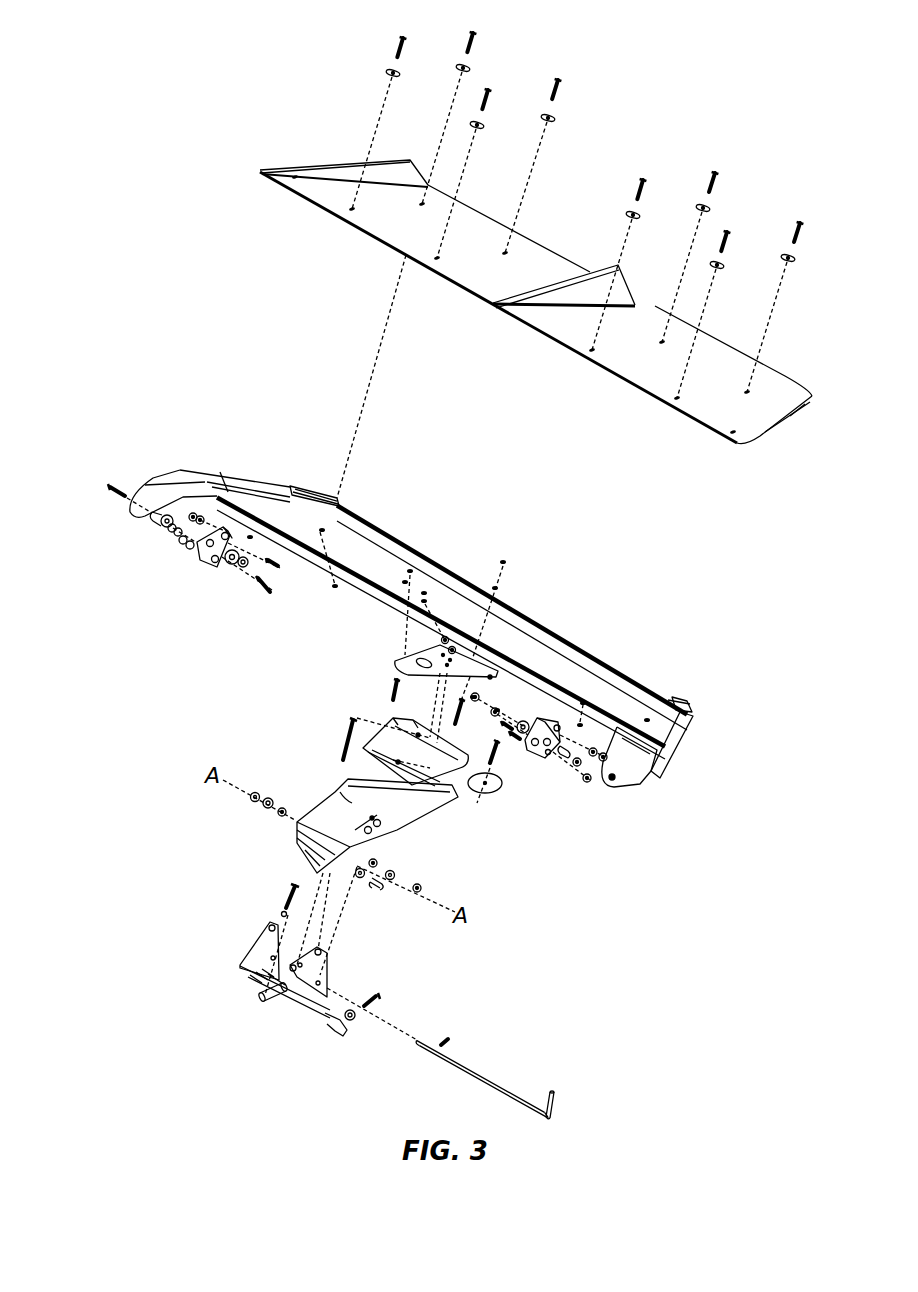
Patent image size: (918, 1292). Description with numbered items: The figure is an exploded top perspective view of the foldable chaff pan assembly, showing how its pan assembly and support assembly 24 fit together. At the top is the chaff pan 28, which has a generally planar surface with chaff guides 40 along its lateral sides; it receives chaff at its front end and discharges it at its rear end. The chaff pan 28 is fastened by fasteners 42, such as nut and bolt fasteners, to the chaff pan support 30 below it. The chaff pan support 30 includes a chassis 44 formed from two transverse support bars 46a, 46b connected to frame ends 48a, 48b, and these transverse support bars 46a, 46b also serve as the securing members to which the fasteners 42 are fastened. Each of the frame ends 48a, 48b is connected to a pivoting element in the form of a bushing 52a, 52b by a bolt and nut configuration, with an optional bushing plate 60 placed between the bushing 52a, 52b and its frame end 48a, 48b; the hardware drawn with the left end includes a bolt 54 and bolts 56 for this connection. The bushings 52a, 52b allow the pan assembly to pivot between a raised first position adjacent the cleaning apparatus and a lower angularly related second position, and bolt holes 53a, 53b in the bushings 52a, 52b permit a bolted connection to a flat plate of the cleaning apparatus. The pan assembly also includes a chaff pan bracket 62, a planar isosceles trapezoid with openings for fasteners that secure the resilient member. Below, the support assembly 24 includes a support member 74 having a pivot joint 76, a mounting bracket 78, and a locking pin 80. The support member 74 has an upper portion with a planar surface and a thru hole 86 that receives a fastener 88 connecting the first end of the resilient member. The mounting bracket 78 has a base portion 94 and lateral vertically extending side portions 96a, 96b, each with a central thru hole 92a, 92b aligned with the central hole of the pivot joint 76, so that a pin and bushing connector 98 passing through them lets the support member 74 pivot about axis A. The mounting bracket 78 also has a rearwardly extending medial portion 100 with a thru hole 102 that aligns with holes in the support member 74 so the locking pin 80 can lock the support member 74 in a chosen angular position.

The chaff pan 28 is at (544, 302).
The chaff guides 40 is at (556, 296).
The fasteners 42 is at (595, 252).
The chassis 44 is at (431, 623).
The transverse support bar 46a is at (512, 611).
The transverse support bar 46b is at (441, 629).
The frame end 48a is at (210, 476).
The frame end 48b is at (667, 753).
The chaff pan support 30 is at (712, 741).
The bolt 54 is at (116, 479).
The bushing plate 60 is at (132, 533).
The bushing 52a is at (181, 557).
The bolt hole 53a is at (219, 591).
The bolt 56 is at (264, 592).
The chaff pan bracket 62 is at (424, 682).
The thru hole 86 is at (375, 759).
The support assembly 24 is at (360, 833).
The support member 74 is at (399, 827).
The pivot joint 76 is at (295, 855).
The pin and bushing connector 98 is at (247, 816).
The fastener 88 is at (509, 800).
The bushing 52b is at (526, 764).
The bolt hole 53b is at (576, 774).
The central thru hole 92a is at (252, 939).
The central thru hole 92b is at (368, 983).
The side portion 96a is at (232, 949).
The side portion 96b is at (342, 932).
The thru hole 102 is at (346, 960).
The base portion 94 is at (260, 992).
The medial portion 100 is at (241, 1005).
The mounting bracket 78 is at (302, 1030).
The locking pin 80 is at (485, 1079).